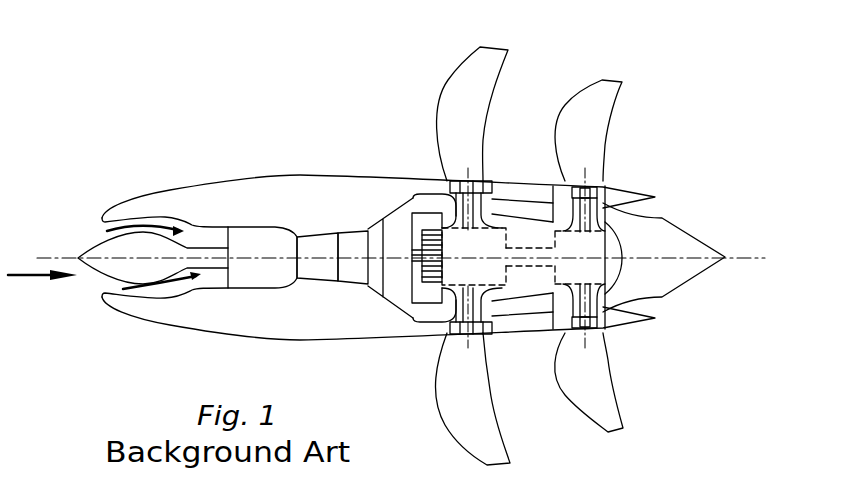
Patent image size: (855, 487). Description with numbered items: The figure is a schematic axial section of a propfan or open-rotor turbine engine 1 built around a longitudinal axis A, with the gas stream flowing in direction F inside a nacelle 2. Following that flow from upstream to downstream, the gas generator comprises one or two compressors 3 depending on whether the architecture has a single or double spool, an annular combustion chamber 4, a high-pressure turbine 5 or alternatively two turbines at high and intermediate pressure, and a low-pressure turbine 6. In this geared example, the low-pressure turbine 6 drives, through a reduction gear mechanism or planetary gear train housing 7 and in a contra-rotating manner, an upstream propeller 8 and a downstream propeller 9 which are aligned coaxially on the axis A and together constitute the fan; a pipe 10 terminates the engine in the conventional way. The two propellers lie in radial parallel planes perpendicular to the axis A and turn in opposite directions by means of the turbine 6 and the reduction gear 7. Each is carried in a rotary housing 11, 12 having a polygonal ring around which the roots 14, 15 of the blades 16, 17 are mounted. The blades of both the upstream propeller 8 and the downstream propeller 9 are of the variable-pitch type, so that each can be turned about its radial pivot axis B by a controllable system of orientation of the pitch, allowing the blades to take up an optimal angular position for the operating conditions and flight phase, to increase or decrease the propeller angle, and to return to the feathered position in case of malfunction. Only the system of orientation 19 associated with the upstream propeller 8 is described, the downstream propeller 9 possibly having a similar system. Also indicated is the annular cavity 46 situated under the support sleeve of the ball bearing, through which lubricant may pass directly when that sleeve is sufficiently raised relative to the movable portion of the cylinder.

The turbine engine 1 is at (177, 155).
The nacelle 2 is at (245, 170).
The compressor 3 is at (251, 268).
The annular combustion chamber 4 is at (311, 268).
The high-pressure turbine 5 is at (353, 268).
The low-pressure turbine 6 is at (393, 268).
The reduction gear mechanism 7 is at (409, 205).
The upstream propeller 8 is at (514, 448).
The downstream propeller 9 is at (627, 437).
The pipe 10 is at (716, 230).
The rotary housing 11 is at (493, 318).
The rotary housing 12 is at (557, 307).
The blade root 14 is at (448, 182).
The blade root 15 is at (583, 190).
The blade 16 is at (495, 58).
The blade 17 is at (608, 90).
The system of orientation of the blades 19 is at (464, 268).
The annular cavity 46 is at (487, 197).
The longitudinal axis A is at (748, 253).
The radial pivot axis B is at (469, 168).
The flow direction F is at (15, 277).